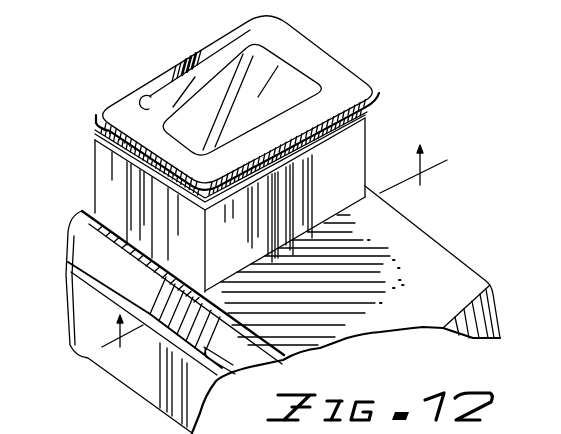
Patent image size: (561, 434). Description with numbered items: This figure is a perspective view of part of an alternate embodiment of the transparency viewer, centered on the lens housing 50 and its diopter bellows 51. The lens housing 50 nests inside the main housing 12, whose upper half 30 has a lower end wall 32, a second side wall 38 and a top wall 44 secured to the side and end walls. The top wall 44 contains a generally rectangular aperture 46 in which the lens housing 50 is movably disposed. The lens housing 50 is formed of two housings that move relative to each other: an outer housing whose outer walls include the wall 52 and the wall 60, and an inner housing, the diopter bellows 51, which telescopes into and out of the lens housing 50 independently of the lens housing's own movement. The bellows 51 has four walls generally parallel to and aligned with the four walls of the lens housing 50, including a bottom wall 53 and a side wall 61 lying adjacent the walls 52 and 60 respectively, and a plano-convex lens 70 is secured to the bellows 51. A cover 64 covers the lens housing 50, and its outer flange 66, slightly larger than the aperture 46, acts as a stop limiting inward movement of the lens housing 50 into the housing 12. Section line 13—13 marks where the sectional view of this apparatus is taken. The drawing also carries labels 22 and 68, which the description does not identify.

The housing 12 is at (428, 217).
The section line 13— 13 is at (274, 260).
The tray 22 is at (92, 356).
The upper half 30 is at (457, 288).
The lower end wall 32 is at (494, 306).
The second side wall 38 is at (82, 212).
The top wall 44 is at (437, 262).
The rectangular aperture 46 is at (233, 268).
The lens housing 50 is at (96, 138).
The diopter bellows 51 is at (180, 45).
The outer wall 52 is at (365, 147).
The bottom wall 53 is at (311, 137).
The outer wall 60 is at (104, 183).
The side wall 61 is at (116, 147).
The cover 64 is at (357, 90).
The outer flange 66 is at (94, 118).
The notch 68 is at (145, 98).
The plano-convex lens 70 is at (302, 83).